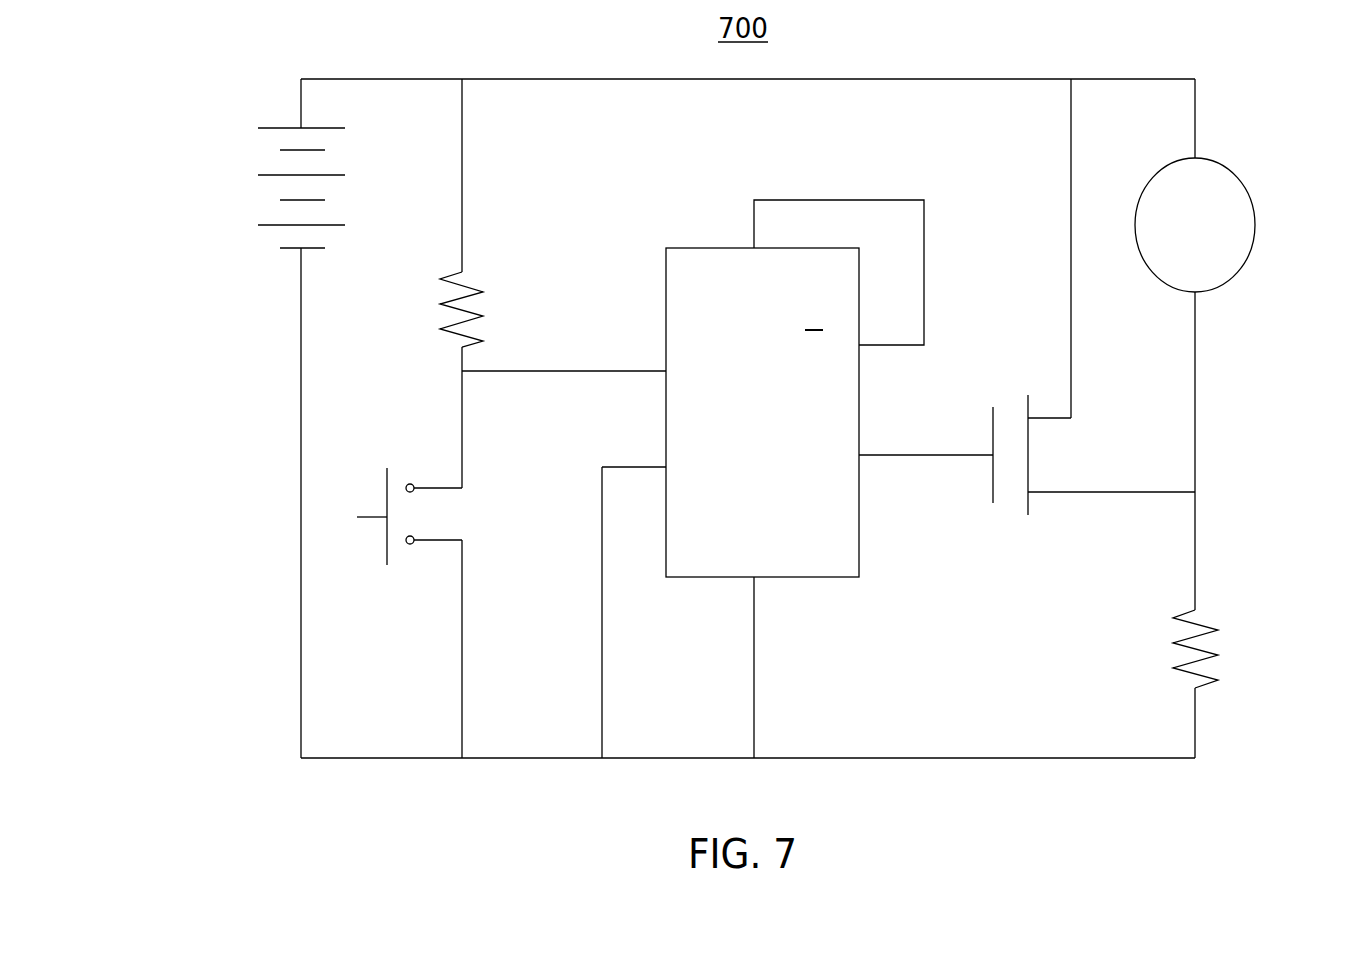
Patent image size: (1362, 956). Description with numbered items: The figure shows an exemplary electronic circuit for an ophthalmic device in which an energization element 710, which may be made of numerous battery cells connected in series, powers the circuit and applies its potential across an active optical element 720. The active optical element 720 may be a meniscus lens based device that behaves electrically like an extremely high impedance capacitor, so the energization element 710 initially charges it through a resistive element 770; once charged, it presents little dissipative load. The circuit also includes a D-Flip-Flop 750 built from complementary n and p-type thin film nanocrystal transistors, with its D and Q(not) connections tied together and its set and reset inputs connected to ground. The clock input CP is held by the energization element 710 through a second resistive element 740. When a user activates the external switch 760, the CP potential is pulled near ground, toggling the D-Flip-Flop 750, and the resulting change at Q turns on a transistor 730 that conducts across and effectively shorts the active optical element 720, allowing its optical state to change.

The energization element 710 is at (242, 155).
The active optical element 720 is at (1230, 201).
The transistor 730 is at (1007, 517).
The resistive element 740 is at (537, 241).
The D-Flip-Flop 750 is at (731, 285).
The external switch 760 is at (333, 586).
The resistive element 770 is at (1110, 657).